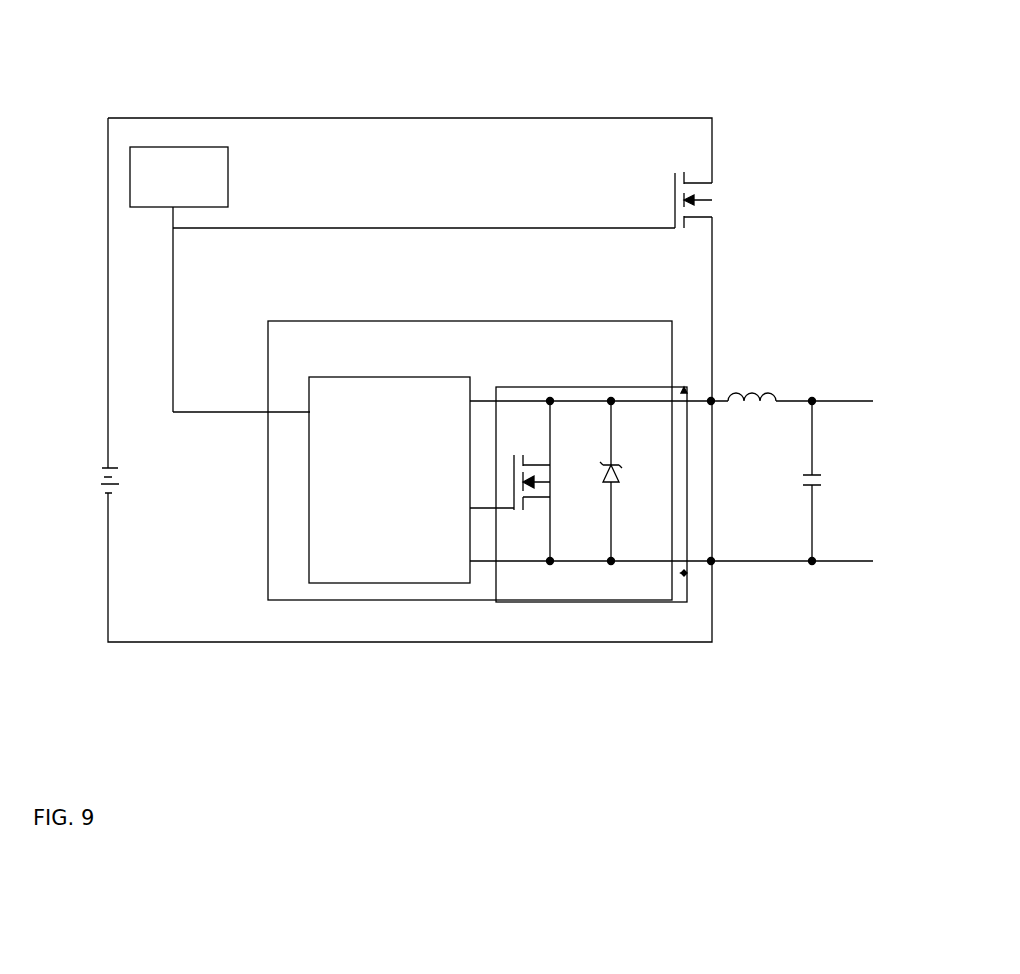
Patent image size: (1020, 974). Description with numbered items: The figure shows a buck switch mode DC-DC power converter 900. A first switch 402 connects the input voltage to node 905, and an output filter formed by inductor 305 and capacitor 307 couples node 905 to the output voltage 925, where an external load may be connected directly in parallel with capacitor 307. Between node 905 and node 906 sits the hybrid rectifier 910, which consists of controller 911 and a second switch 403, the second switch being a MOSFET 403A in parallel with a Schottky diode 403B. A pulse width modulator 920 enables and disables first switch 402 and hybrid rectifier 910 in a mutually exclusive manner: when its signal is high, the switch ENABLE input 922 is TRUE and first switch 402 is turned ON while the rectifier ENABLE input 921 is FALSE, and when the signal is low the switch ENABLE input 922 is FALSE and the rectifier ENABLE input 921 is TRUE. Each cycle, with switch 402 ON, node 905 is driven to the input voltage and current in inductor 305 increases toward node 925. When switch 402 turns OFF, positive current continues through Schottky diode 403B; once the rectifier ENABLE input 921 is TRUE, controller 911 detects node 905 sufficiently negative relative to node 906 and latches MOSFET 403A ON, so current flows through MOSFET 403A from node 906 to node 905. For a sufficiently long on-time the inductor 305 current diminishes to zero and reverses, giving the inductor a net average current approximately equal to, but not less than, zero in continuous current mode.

The switch mode DC-DC power converter 900 is at (569, 64).
The pulse width modulator 920 is at (179, 279).
The switch ENABLE input 922 is at (424, 222).
The first switch 402 is at (677, 195).
The rectifier ENABLE input 921 is at (241, 401).
The hybrid rectifier 910 is at (358, 311).
The controller 911 is at (389, 480).
The second switch 403 is at (671, 474).
The MOSFET 403A is at (530, 481).
The Schottky diode 403B is at (627, 481).
The node 905 is at (702, 404).
The node 906 is at (703, 561).
The inductor 305 is at (761, 386).
The output voltage 925 is at (823, 393).
The capacitor 307 is at (848, 483).